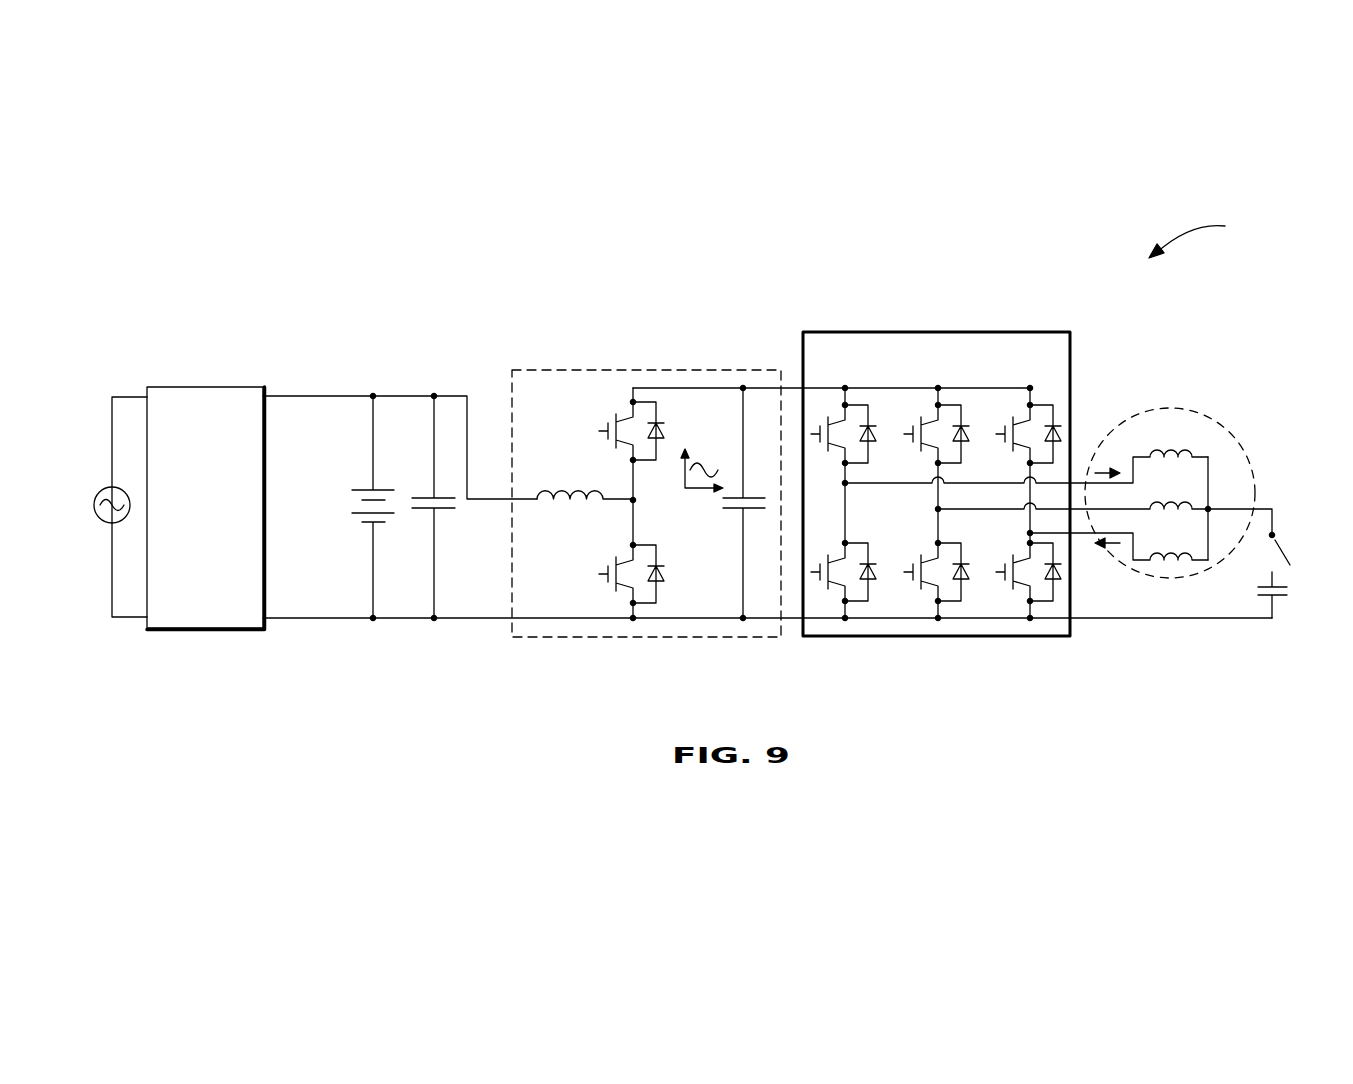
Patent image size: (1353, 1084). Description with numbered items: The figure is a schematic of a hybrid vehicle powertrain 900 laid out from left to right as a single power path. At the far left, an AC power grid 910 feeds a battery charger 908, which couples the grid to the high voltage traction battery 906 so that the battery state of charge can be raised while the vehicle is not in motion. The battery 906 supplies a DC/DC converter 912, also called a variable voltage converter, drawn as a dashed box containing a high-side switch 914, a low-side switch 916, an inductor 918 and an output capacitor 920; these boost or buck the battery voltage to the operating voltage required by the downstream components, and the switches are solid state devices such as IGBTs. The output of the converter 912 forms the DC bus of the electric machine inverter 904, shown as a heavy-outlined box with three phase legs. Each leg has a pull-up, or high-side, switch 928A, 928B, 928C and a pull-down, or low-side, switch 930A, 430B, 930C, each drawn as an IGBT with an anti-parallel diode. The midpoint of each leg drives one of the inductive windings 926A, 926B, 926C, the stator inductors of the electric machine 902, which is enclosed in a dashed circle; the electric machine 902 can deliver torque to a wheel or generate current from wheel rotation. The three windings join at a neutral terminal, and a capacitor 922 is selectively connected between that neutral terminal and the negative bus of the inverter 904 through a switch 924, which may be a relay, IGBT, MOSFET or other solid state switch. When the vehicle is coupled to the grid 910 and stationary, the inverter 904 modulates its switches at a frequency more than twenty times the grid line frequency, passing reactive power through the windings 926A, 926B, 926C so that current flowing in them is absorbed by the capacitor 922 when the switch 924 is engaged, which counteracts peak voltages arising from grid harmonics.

The hybrid vehicle powertrain 900 is at (1208, 237).
The electric machine 902 is at (1088, 489).
The electric machine inverter 904 is at (916, 475).
The high voltage traction battery 906 is at (355, 489).
The battery charger 908 is at (213, 387).
The AC power grid 910 is at (97, 493).
The DC/DC converter 912 is at (646, 468).
The high-side switch 914 is at (626, 421).
The low-side switch 916 is at (626, 588).
The inductor 918 is at (557, 503).
The output capacitor 920 is at (737, 512).
The capacitor 922 is at (1278, 598).
The switch 924 is at (1262, 558).
The inductive winding 926A is at (1150, 458).
The inductive winding 926B is at (1188, 505).
The inductive winding 926C is at (1178, 558).
The pull-up switch 928A is at (838, 420).
The pull-up switch 928B is at (930, 420).
The pull-up switch 928C is at (1022, 420).
The pull-down switch 930A is at (838, 590).
The lower inverter switch phase B 430B is at (930, 590).
The pull-down switch 930C is at (1022, 590).